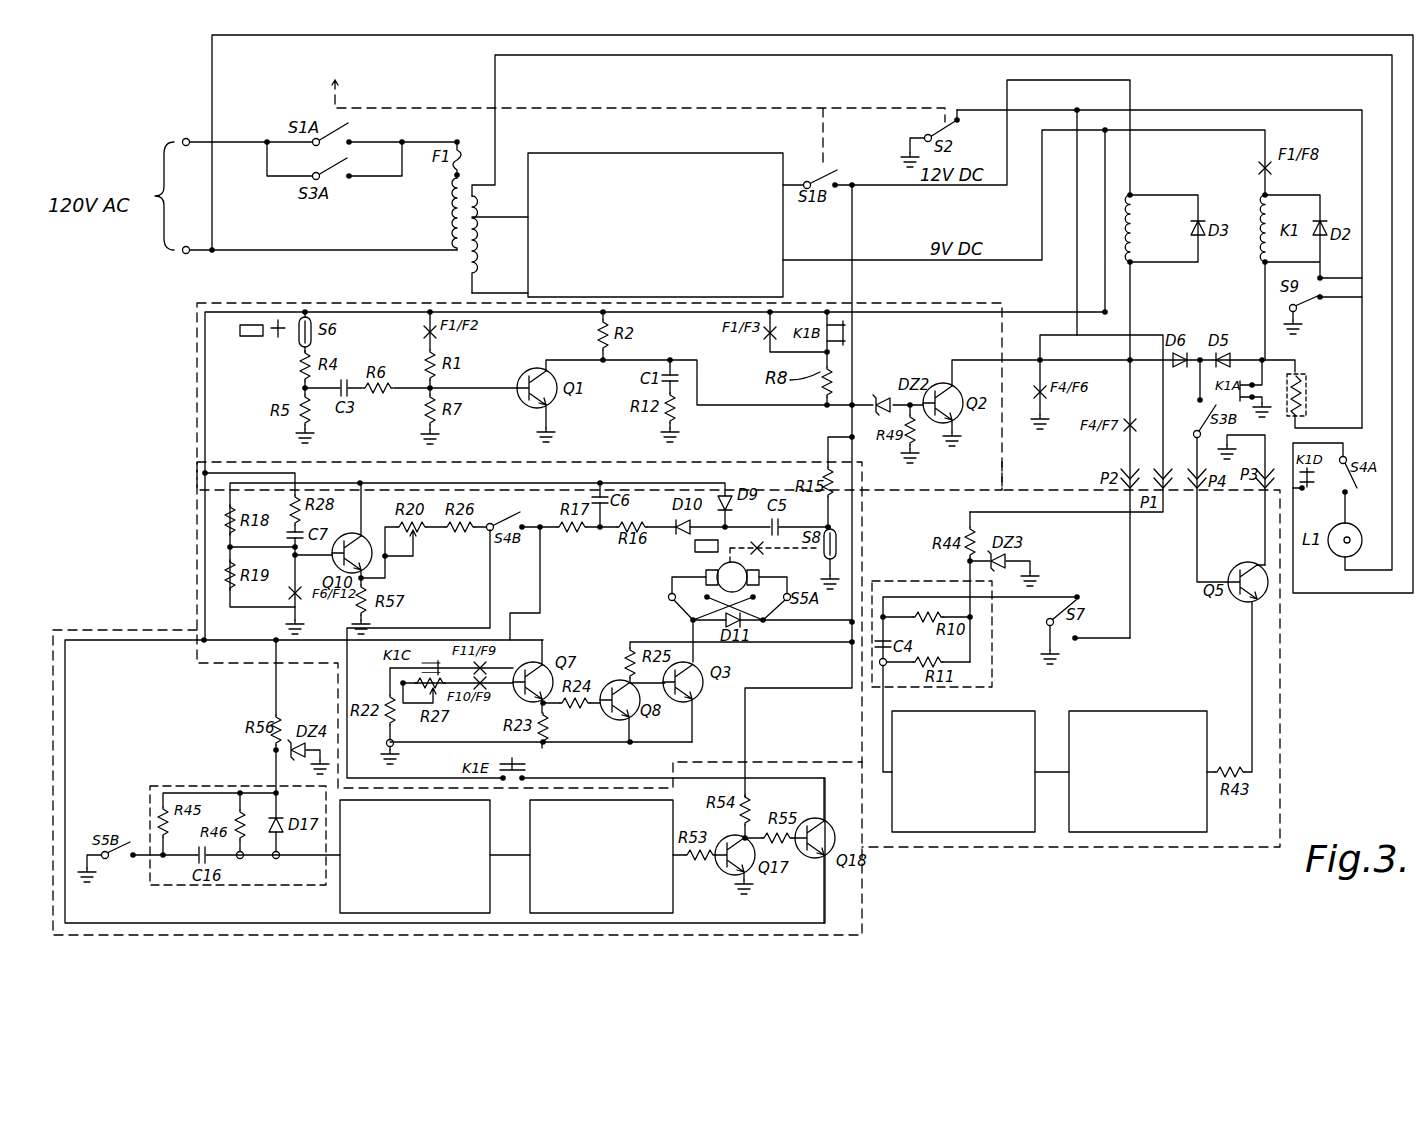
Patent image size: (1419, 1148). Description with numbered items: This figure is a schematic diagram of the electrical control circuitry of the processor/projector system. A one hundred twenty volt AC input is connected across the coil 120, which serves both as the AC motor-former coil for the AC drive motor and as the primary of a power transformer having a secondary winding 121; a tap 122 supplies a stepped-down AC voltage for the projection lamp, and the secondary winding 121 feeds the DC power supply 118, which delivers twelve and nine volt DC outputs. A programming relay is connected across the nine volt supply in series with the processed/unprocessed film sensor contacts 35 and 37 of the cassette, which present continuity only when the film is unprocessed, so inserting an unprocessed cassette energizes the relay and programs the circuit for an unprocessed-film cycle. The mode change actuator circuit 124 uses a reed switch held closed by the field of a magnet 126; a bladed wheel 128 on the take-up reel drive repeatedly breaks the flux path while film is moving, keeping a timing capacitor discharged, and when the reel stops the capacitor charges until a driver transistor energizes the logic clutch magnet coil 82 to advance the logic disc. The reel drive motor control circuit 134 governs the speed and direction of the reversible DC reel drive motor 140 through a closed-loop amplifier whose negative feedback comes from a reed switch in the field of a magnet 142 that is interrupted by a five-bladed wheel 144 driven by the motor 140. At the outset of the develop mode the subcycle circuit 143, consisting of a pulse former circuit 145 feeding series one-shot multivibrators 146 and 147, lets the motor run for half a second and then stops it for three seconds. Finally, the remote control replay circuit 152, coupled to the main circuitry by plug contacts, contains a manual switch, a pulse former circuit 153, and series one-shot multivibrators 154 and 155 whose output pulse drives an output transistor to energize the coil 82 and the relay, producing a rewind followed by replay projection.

The processed/unprocessed film sensor contact 35 is at (1298, 372).
The processed/unprocessed film sensor contact 37 is at (1304, 412).
The logic clutch magnet coil 82 is at (1145, 228).
The DC power supply 118 is at (655, 225).
The coil 120 is at (452, 216).
The secondary winding 121 is at (467, 263).
The tap 122 is at (478, 192).
The mode change actuator circuit 124 is at (197, 403).
The magnet 126 is at (255, 336).
The bladed wheel 128 is at (277, 340).
The reel drive motor control circuit 134 is at (197, 568).
The reel drive motor 140 is at (717, 576).
The magnet 142 is at (695, 548).
The five-bladed wheel 144 is at (768, 552).
The subcycle circuit 143 is at (118, 630).
The pulse former circuit 145 is at (200, 885).
The one-shot multivibrator 146 is at (415, 856).
The one-shot multivibrator 147 is at (601, 856).
The remote control replay circuit 152 is at (1284, 665).
The pulse former circuit 153 is at (930, 580).
The one-shot multivibrator 154 is at (963, 771).
The one-shot multivibrator 155 is at (1138, 771).